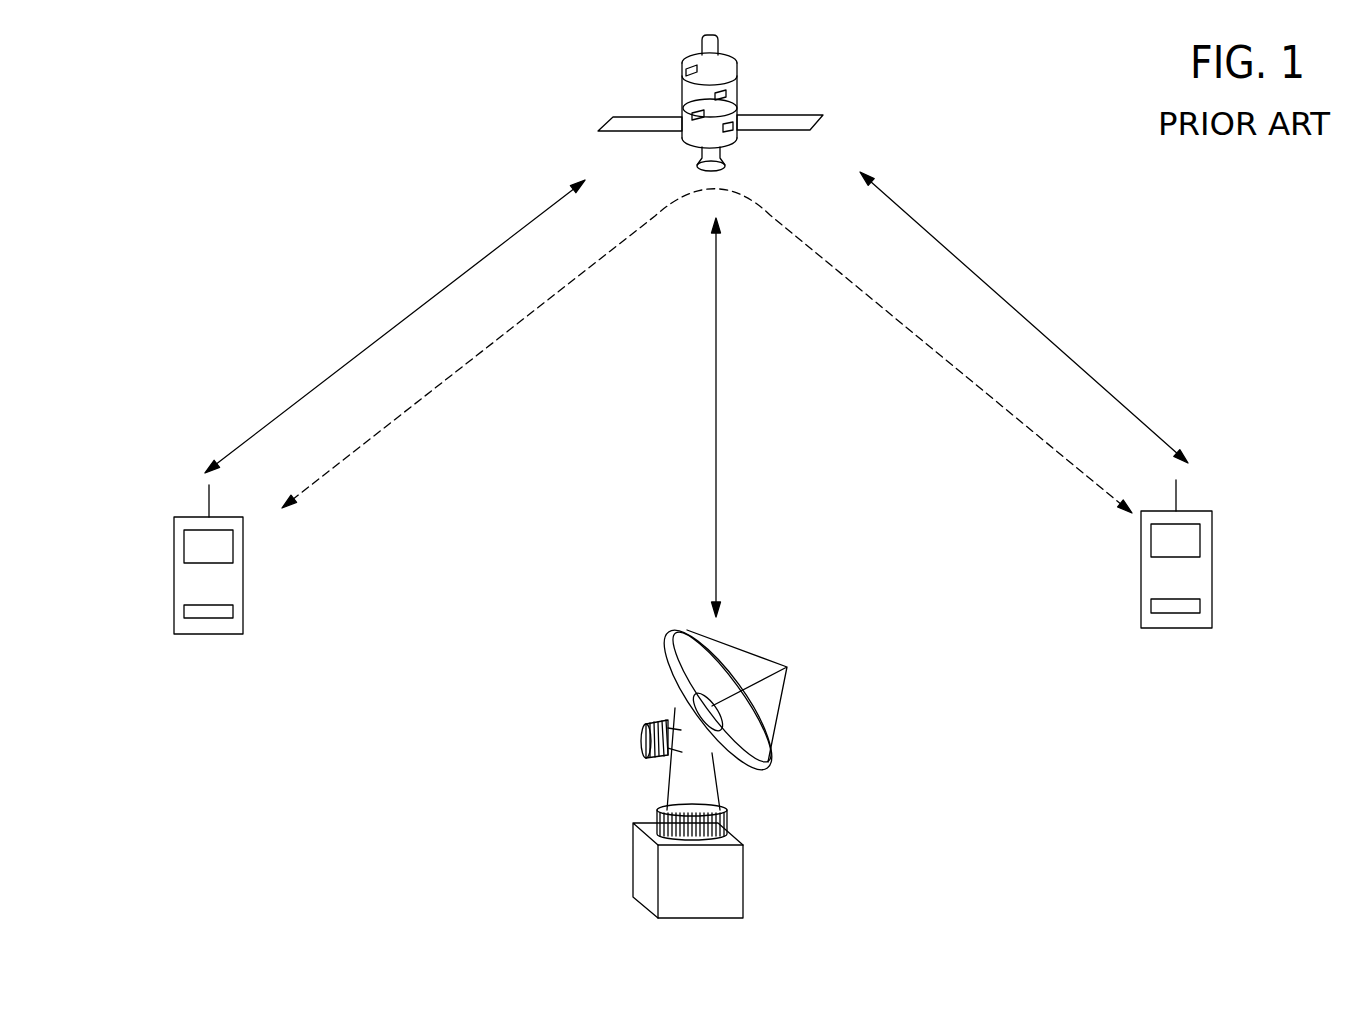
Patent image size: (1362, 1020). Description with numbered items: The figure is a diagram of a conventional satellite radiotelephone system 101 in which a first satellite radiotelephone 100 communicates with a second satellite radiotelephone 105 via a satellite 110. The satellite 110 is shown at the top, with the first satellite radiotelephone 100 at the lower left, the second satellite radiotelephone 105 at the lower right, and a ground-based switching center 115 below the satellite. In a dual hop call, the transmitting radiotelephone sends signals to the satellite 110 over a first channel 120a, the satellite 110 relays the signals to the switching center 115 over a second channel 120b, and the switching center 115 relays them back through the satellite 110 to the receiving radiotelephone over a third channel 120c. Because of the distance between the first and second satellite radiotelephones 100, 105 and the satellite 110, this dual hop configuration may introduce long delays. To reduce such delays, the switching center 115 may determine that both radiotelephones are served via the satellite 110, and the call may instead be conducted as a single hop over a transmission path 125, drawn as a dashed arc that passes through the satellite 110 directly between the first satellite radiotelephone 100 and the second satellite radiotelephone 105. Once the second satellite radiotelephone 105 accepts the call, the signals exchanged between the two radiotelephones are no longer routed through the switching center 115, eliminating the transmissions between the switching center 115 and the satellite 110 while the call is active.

The satellite radiotelephone system 101 is at (345, 223).
The satellite 110 is at (682, 77).
The first satellite radiotelephone 100 is at (213, 634).
The second satellite radiotelephone 105 is at (1186, 628).
The switching center 115 is at (788, 862).
The first channel 120a is at (367, 348).
The second channel 120b is at (717, 490).
The third channel 120c is at (1022, 315).
The transmission path 125 is at (425, 397).